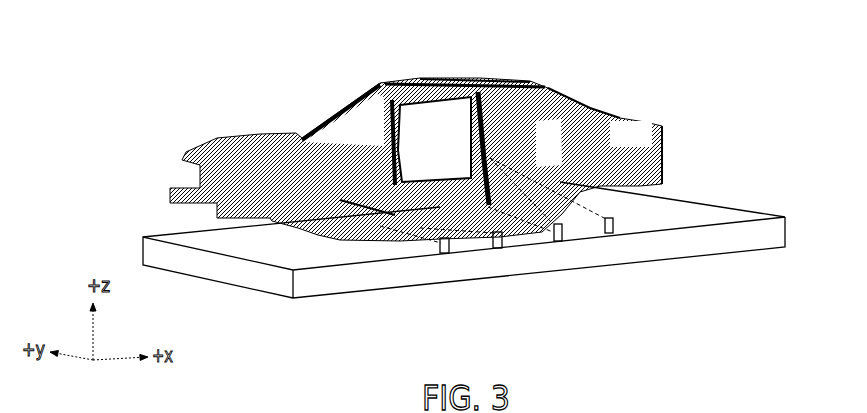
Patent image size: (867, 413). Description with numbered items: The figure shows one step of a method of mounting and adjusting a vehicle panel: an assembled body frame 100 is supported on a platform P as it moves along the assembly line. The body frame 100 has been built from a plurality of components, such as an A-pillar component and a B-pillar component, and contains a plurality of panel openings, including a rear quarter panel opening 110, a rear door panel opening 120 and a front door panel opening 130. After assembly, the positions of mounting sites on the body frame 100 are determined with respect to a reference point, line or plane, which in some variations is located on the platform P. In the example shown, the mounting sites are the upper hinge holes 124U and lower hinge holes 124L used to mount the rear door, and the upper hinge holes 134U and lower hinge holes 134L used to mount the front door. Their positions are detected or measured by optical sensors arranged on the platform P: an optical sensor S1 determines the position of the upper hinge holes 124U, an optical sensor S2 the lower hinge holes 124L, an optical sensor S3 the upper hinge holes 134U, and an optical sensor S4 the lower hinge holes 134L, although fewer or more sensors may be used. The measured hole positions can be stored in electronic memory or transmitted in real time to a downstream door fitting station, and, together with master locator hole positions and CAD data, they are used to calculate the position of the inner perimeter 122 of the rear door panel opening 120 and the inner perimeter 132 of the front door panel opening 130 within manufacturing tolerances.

The body frame 100 is at (550, 91).
The rear quarter panel opening 110 is at (640, 147).
The rear door panel opening 120 is at (544, 141).
The inner perimeter of the rear door panel opening 122 is at (505, 89).
The front door panel opening 130 is at (446, 122).
The inner perimeter of the front door panel opening 132 is at (408, 108).
The upper hinge holes 124U is at (490, 158).
The lower hinge holes 124L is at (489, 206).
The upper hinge holes 134U is at (378, 168).
The lower hinge holes 134L is at (372, 222).
The optical sensor S1 is at (614, 233).
The optical sensor S2 is at (558, 241).
The optical sensor S3 is at (496, 248).
The optical sensor S4 is at (443, 251).
The platform P is at (745, 212).